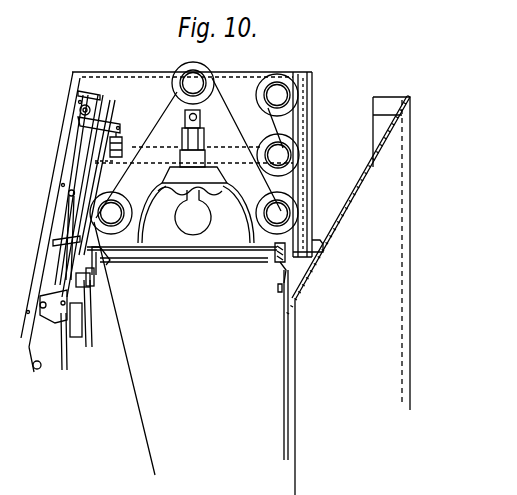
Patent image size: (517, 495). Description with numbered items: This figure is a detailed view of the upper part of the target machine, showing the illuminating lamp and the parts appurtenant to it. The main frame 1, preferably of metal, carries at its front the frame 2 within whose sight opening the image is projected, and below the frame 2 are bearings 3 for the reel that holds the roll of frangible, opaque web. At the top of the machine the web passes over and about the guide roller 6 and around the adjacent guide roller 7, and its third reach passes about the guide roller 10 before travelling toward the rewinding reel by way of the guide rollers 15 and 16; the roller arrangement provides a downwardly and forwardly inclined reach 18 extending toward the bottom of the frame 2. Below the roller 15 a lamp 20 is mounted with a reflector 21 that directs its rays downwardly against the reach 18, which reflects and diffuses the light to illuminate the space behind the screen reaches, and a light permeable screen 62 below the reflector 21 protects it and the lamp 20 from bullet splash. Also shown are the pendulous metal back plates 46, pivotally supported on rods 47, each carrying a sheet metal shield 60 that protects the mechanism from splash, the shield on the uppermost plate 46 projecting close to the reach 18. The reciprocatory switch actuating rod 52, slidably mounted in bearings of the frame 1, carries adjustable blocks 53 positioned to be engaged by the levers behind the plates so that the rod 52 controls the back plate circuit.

The main frame 1 is at (249, 72).
The frame 2 is at (341, 223).
The bearings 3 is at (205, 296).
The guide roller 6 is at (284, 99).
The guide roller 7 is at (283, 152).
The guide roller 10 is at (276, 214).
The guide roller 15 is at (190, 79).
The guide roller 16 is at (118, 208).
The reach 18 is at (124, 342).
The lamp 20 is at (206, 226).
The reflector 21 is at (140, 222).
The back plate 46 is at (93, 302).
The rod 47 is at (79, 312).
The switch actuating rod 52 is at (52, 258).
The block 53 is at (41, 307).
The shield 60 is at (100, 265).
The light permeable screen 62 is at (175, 255).